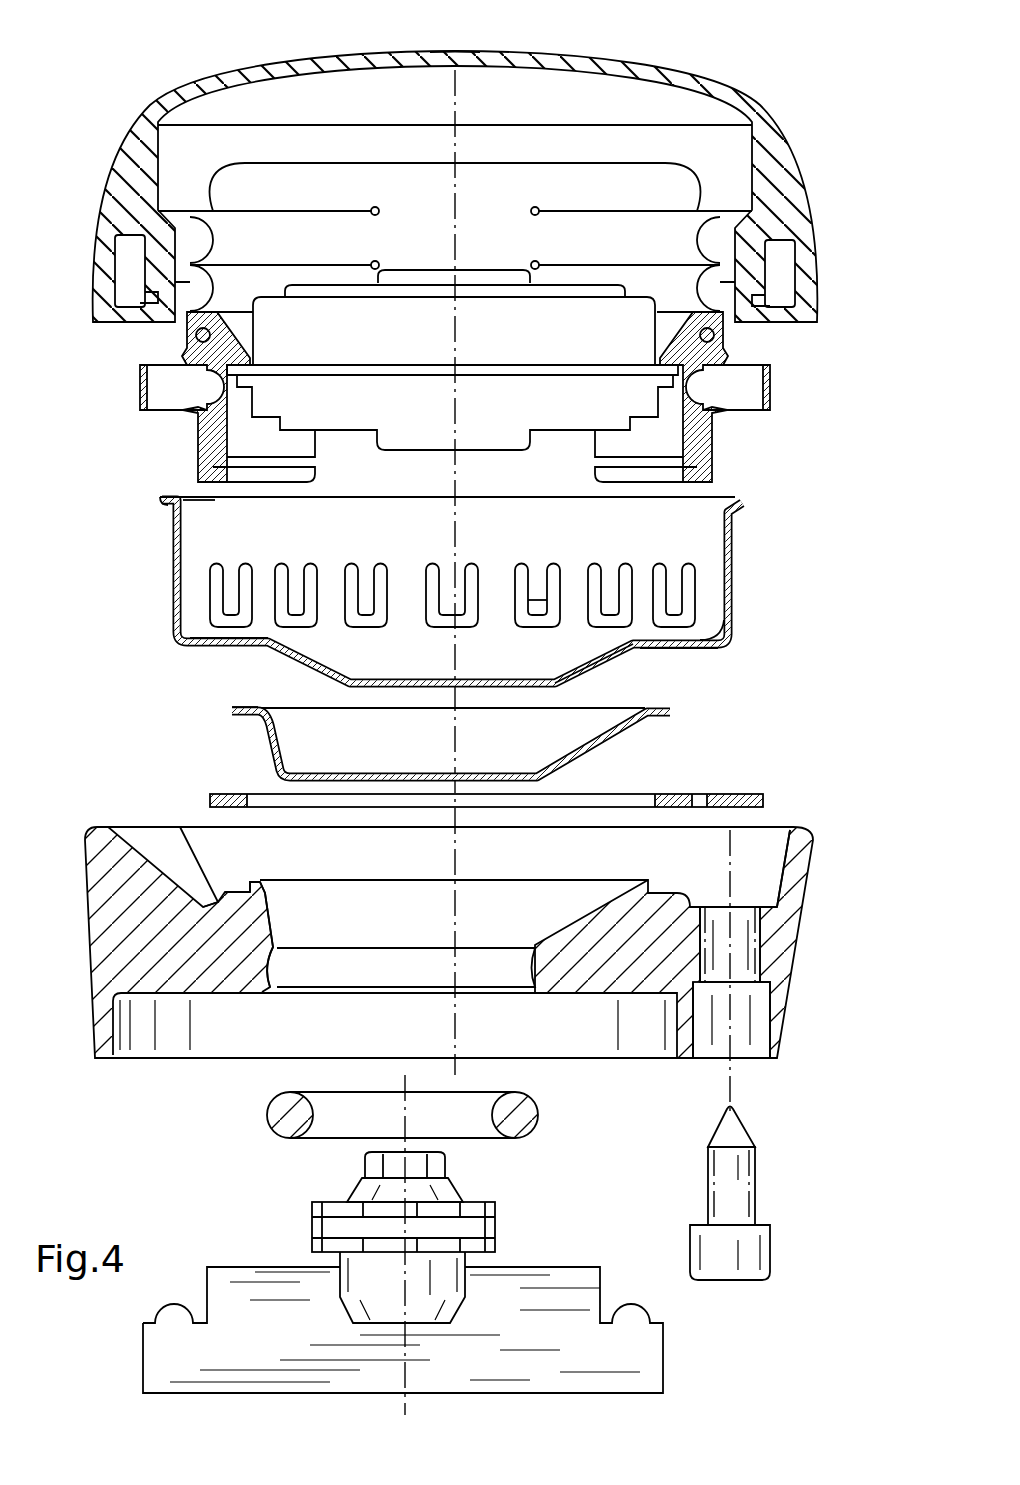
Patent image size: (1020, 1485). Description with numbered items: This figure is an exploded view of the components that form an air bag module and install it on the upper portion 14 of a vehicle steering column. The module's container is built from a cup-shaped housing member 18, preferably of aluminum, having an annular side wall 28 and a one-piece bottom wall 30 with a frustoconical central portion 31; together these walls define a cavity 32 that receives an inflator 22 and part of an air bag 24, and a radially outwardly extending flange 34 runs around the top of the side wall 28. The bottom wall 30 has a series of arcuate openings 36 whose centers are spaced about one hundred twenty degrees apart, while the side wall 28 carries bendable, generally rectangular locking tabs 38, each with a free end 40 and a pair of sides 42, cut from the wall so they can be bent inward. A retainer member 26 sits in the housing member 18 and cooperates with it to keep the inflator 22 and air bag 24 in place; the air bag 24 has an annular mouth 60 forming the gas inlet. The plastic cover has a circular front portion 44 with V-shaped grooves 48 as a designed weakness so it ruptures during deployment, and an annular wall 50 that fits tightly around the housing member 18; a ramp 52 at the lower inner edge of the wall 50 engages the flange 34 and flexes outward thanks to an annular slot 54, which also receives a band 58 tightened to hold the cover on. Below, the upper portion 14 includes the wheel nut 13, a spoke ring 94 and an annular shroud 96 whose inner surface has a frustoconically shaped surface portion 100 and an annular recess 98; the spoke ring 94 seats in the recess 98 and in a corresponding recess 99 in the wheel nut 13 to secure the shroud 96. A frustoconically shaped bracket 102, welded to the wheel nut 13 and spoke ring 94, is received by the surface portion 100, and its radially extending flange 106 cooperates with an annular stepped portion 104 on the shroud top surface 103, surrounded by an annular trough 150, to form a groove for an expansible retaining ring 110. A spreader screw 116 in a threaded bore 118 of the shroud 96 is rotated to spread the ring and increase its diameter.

The wheel nut 13 is at (440, 1162).
The upper portion of the steering column 14 is at (479, 909).
The cup-shaped housing member 18 is at (459, 575).
The inflator 22 is at (535, 346).
The air bag 24 is at (528, 172).
The retainer member 26 is at (733, 441).
The annular side wall 28 is at (375, 534).
The bottom wall 30 is at (660, 651).
The frustoconical central portion 31 is at (600, 668).
The cavity 32 is at (208, 505).
The flange 34 is at (160, 498).
The arcuate openings 36 is at (695, 640).
The locking tabs 38 is at (537, 580).
The free end 40 is at (533, 624).
The sides 42 is at (548, 597).
The front portion 44 is at (518, 60).
The V-shaped grooves 48 is at (462, 52).
The annular wall 50 is at (160, 262).
The ramp 52 is at (180, 288).
The annular slot 54 is at (133, 250).
The band 58 is at (140, 392).
The mouth 60 is at (688, 303).
The spoke ring 94 is at (538, 1122).
The shroud 96 is at (783, 928).
The annular recess 98 is at (270, 970).
The recess 99 is at (330, 1228).
The frustoconically shaped surface portion 100 is at (272, 908).
The bracket 102 is at (410, 720).
The top surface 103 is at (143, 845).
The annular stepped portion 104 is at (255, 880).
The flange 106 is at (260, 708).
The expansible retaining ring 110 is at (740, 795).
The spreader screw 116 is at (720, 1182).
The threaded bore 118 is at (745, 953).
The annular trough 150 is at (208, 900).